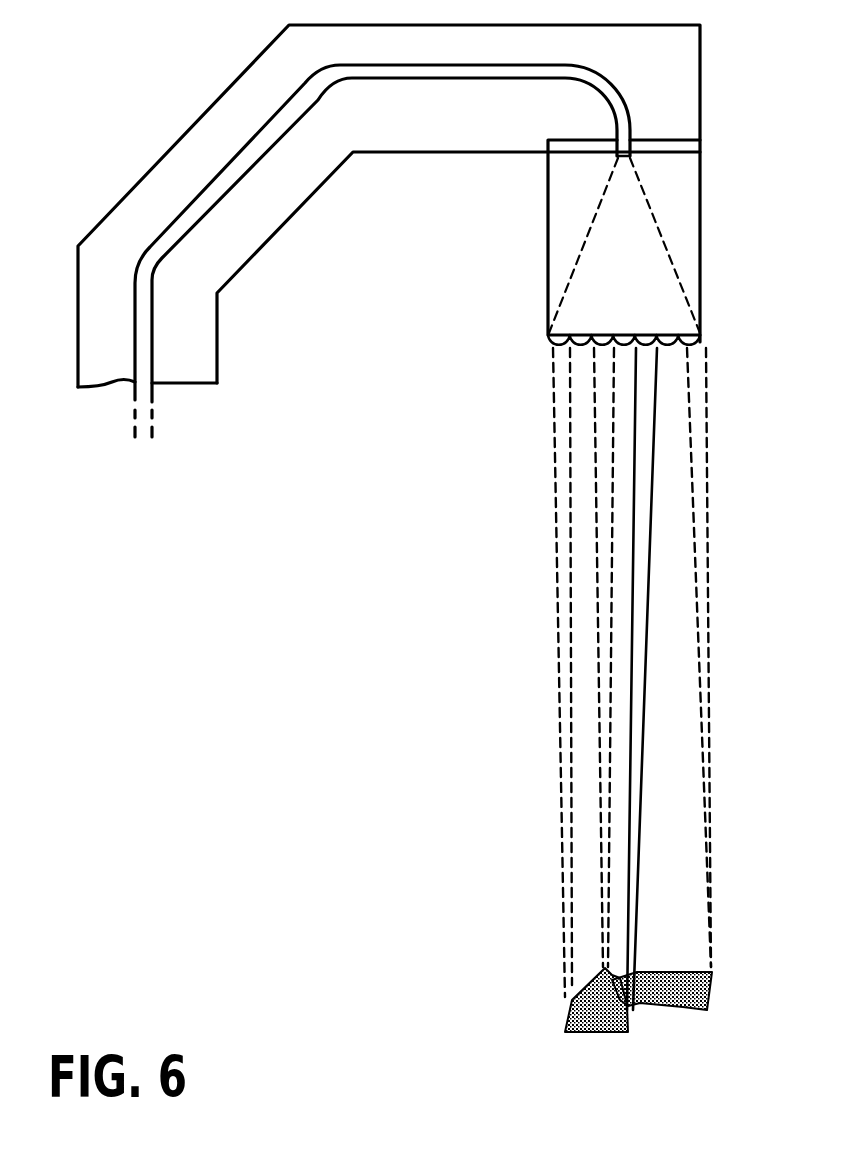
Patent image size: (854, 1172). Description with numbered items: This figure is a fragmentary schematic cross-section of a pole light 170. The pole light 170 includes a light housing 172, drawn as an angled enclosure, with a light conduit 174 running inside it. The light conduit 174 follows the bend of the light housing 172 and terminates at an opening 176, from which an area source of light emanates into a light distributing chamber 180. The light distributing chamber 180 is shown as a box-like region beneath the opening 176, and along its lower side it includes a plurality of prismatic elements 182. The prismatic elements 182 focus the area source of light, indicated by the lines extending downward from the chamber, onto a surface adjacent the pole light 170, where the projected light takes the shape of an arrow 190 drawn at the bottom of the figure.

The pole light 170 is at (70, 415).
The light housing 172 is at (105, 220).
The light conduit 174 is at (257, 130).
The opening 176 is at (627, 158).
The light distributing chamber 180 is at (688, 238).
The prismatic elements 182 is at (673, 347).
The arrow 190 is at (683, 1010).